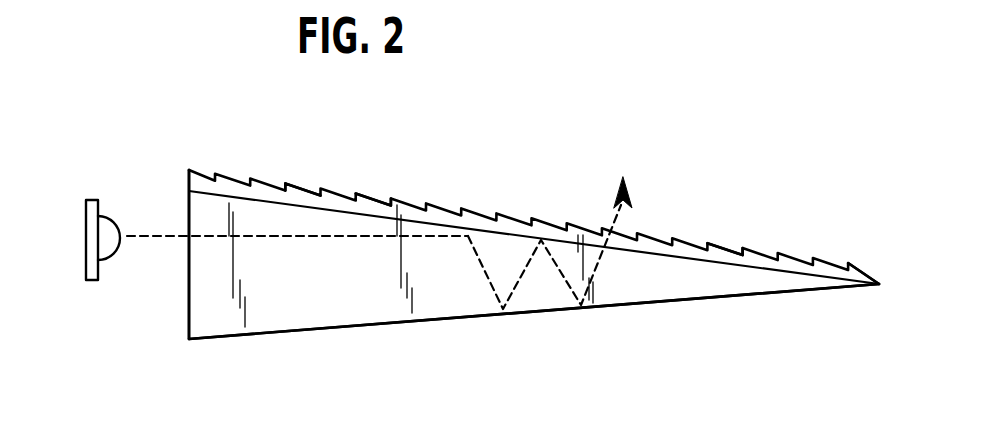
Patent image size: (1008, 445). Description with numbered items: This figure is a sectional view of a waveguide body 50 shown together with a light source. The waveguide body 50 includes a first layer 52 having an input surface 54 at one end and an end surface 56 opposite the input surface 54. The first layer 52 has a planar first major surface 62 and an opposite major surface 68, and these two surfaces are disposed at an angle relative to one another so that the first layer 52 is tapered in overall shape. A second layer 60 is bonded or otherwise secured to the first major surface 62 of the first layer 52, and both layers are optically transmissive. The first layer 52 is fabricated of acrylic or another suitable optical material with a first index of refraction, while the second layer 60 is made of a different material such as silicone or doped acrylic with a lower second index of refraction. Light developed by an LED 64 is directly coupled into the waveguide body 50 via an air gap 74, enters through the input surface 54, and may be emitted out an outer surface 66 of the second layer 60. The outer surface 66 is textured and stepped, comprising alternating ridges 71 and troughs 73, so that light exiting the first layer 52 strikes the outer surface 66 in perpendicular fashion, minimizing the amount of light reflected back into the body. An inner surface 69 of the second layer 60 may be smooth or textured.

The waveguide body 50 is at (362, 300).
The first layer 52 is at (462, 300).
The input surface 54 is at (189, 208).
The end surface 56 is at (881, 284).
The second layer 60 is at (718, 245).
The first major surface 62 is at (740, 252).
The LED 64 is at (110, 259).
The outer surface 66 is at (373, 196).
The opposite major surface 68 is at (687, 302).
The inner surface 69 is at (512, 237).
The ridges 71 is at (285, 183).
The troughs 73 is at (311, 189).
The air gap 74 is at (160, 229).